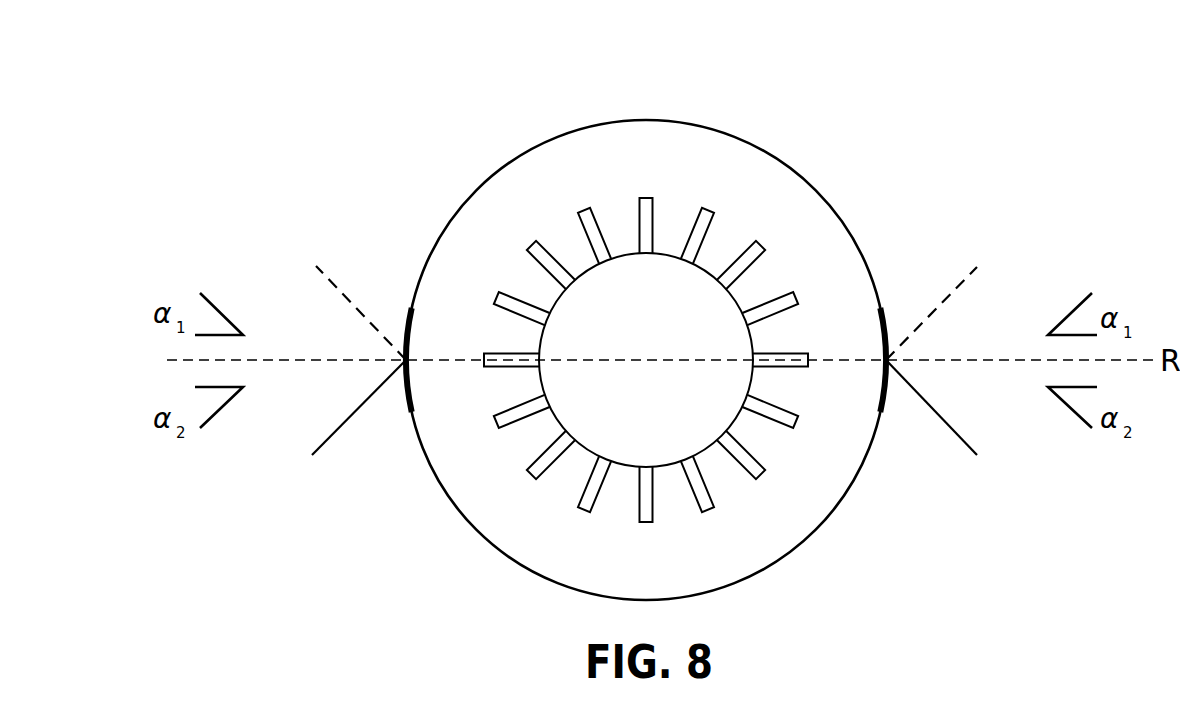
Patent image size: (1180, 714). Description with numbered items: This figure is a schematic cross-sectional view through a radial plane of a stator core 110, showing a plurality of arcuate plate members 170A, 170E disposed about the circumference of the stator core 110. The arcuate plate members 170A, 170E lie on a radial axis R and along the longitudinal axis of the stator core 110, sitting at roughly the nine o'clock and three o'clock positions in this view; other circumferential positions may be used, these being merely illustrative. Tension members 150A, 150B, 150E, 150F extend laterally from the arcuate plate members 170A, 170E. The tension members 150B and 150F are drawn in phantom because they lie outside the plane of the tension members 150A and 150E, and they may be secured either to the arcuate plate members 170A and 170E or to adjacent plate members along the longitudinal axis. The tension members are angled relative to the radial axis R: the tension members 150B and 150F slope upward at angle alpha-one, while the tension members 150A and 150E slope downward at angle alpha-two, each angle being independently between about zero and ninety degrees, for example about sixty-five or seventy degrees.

The stator core 110 is at (758, 146).
The tension member 150A is at (982, 468).
The tension member 150B is at (948, 273).
The tension member 150E is at (310, 462).
The tension member 150F is at (331, 256).
The arcuate plate member 170A is at (893, 410).
The arcuate plate member 170E is at (398, 418).